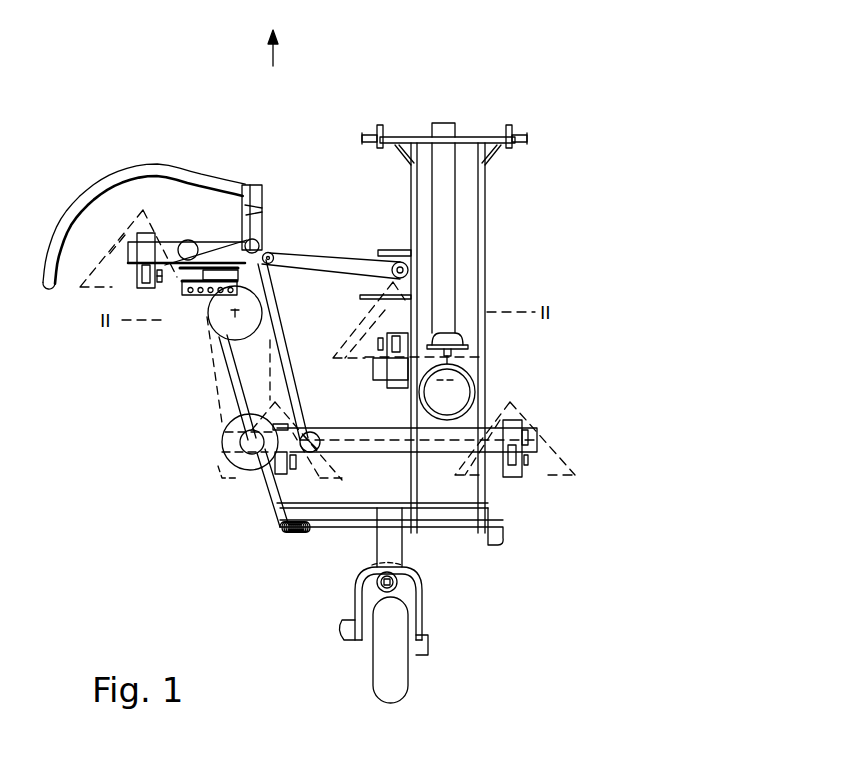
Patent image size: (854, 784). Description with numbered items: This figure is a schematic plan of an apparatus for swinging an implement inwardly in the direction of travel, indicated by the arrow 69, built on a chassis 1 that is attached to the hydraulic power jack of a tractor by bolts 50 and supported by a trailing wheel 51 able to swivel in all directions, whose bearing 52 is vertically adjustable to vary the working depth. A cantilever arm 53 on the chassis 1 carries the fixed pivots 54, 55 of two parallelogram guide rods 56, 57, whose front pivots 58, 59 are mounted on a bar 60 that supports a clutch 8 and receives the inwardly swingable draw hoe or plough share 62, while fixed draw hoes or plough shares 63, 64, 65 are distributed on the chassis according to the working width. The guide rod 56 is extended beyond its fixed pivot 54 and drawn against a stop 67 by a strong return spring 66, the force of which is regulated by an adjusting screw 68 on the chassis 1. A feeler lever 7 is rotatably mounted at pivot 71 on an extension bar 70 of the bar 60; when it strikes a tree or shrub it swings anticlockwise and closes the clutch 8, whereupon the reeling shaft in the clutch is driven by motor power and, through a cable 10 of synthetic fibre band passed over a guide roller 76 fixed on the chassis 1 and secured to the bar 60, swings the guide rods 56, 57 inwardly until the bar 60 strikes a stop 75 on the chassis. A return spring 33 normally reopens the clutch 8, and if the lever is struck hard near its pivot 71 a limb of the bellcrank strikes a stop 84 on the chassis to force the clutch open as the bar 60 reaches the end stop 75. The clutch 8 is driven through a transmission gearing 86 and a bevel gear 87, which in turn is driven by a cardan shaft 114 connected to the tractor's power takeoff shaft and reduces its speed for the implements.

The chassis 1 is at (478, 210).
The feeler lever 7 is at (143, 168).
The clutch 8 is at (228, 320).
The cable 10 is at (345, 276).
The return spring 33 is at (192, 297).
The bolts 50 is at (378, 130).
The trailing wheel 51 is at (385, 676).
The bearing 52 is at (397, 587).
The cantilever arm 53 is at (366, 428).
The fixed pivot 54 is at (252, 456).
The fixed pivot 55 is at (318, 436).
The parallelogram guide rod 56 is at (235, 383).
The parallelogram guide rod 57 is at (284, 341).
The front pivot 58 is at (188, 240).
The front pivot 59 is at (274, 256).
The bar 60 is at (210, 240).
The draw hoe or plough share 62 is at (125, 252).
The fixed draw hoe or plough share 63 is at (217, 474).
The fixed draw hoe or plough share 64 is at (432, 328).
The fixed draw hoe or plough share 65 is at (545, 438).
The return spring 66 is at (318, 531).
The stop 67 is at (294, 503).
The adjusting screw 68 is at (506, 530).
The arrow 69 is at (286, 40).
The extension bar 70 is at (262, 189).
The pivot 71 is at (263, 208).
The stop 75 is at (390, 250).
The guide roller 76 is at (408, 270).
The stop 84 is at (362, 298).
The transmission gearing 86 is at (230, 448).
The bevel gear 87 is at (455, 393).
The cardan shaft 114 is at (447, 126).